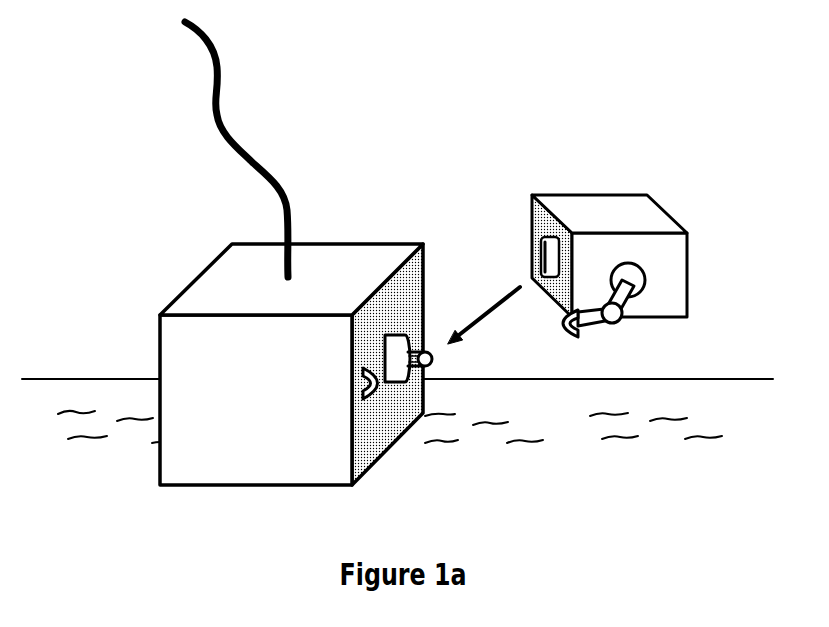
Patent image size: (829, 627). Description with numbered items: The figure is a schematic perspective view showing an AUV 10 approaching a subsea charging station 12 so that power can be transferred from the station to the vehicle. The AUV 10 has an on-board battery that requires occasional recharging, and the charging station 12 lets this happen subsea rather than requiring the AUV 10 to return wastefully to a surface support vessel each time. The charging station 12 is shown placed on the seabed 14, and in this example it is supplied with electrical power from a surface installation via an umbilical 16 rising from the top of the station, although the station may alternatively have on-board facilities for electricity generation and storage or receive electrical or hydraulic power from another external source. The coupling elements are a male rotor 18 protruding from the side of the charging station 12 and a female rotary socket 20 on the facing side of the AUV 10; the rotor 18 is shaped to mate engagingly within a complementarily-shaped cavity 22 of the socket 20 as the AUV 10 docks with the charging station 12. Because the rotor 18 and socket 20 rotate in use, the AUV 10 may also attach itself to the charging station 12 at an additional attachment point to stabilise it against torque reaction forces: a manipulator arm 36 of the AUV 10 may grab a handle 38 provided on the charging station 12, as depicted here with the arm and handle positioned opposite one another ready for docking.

The AUV 10 is at (598, 220).
The subsea charging station 12 is at (222, 288).
The seabed 14 is at (723, 398).
The umbilical 16 is at (243, 150).
The male rotor 18 is at (430, 375).
The female rotary socket 20 is at (535, 217).
The cavity 22 is at (549, 253).
The manipulator arm 36 is at (620, 320).
The handle 38 is at (380, 393).